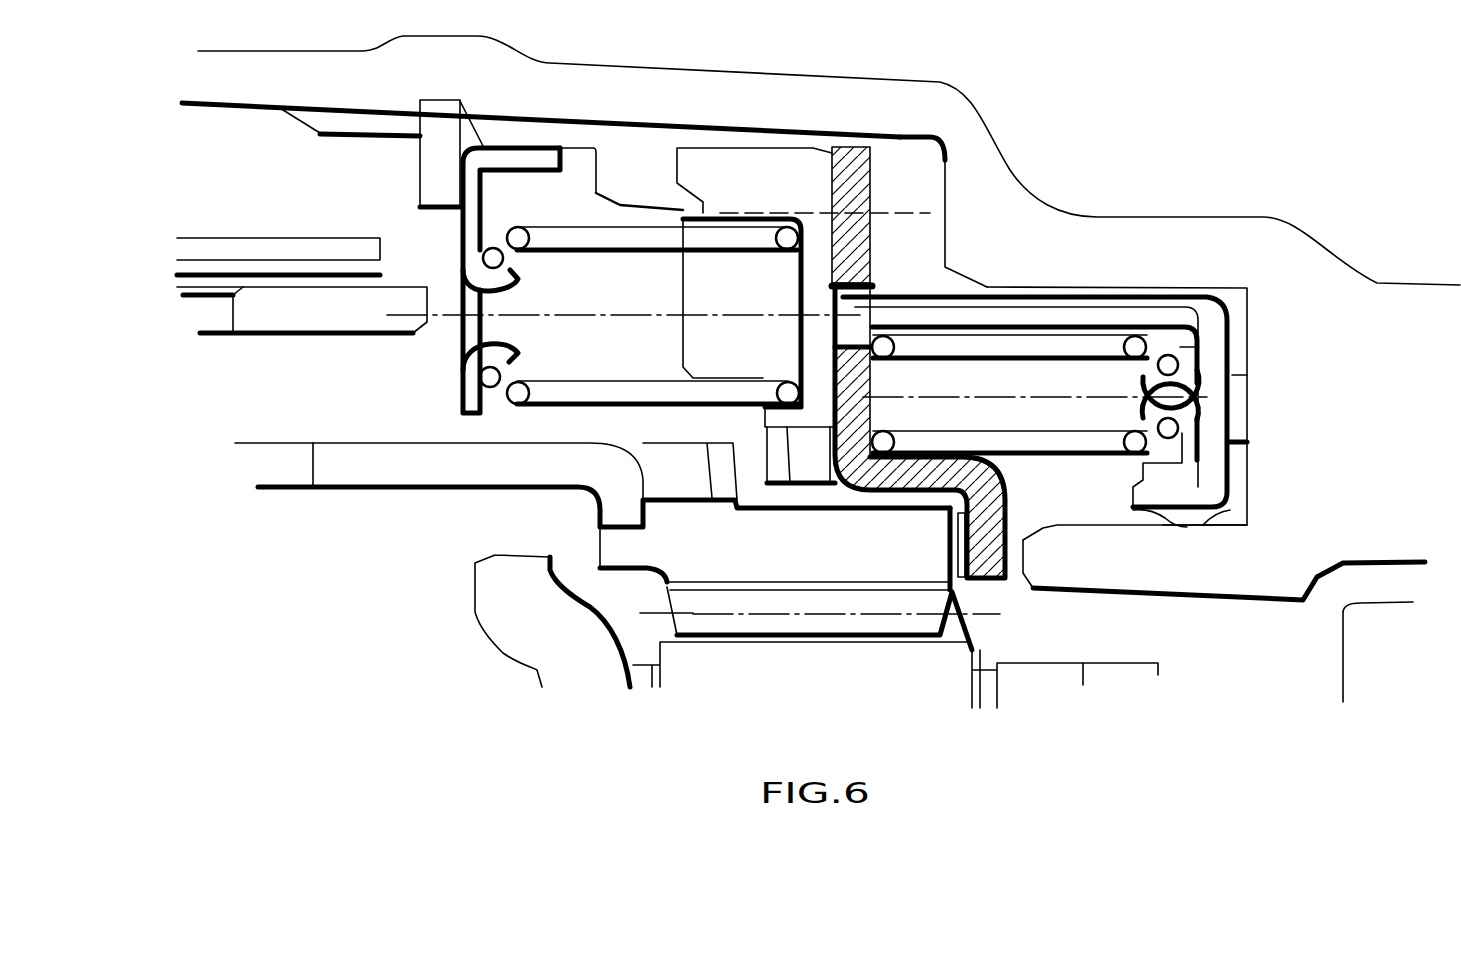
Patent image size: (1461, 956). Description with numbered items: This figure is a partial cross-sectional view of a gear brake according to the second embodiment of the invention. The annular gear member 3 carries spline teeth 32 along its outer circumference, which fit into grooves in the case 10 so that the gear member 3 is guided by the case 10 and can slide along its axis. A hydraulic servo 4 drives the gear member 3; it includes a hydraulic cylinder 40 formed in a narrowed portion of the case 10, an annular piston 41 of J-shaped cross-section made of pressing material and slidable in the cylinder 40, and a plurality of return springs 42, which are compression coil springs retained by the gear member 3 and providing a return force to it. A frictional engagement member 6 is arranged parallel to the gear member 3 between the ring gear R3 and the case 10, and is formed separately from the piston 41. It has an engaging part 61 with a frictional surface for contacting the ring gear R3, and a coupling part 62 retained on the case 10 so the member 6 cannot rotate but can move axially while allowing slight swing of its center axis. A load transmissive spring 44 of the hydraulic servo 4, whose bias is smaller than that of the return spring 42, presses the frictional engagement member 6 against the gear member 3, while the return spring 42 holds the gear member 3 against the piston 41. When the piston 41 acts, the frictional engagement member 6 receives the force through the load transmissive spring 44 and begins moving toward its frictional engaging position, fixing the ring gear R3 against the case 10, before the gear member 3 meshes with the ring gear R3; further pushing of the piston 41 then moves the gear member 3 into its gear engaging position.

The gear member 3 is at (700, 132).
The spline teeth 32 is at (758, 157).
The frictional engagement member 6 is at (848, 132).
The coupling part 62 is at (853, 160).
The case 10 is at (1222, 203).
The hydraulic servo 4 is at (1116, 272).
The annular piston 41 is at (1215, 352).
The hydraulic cylinder 40 is at (1242, 508).
The load transmissive spring 44 is at (1000, 440).
The return springs 42 is at (590, 252).
The engaging part 61 is at (968, 540).
The ring gear R3 is at (605, 538).